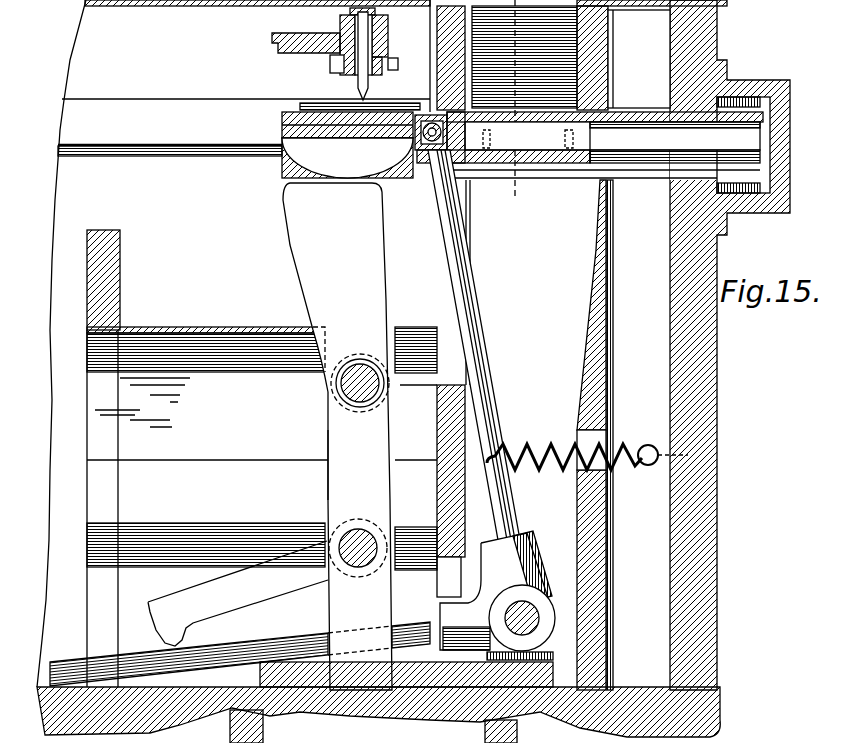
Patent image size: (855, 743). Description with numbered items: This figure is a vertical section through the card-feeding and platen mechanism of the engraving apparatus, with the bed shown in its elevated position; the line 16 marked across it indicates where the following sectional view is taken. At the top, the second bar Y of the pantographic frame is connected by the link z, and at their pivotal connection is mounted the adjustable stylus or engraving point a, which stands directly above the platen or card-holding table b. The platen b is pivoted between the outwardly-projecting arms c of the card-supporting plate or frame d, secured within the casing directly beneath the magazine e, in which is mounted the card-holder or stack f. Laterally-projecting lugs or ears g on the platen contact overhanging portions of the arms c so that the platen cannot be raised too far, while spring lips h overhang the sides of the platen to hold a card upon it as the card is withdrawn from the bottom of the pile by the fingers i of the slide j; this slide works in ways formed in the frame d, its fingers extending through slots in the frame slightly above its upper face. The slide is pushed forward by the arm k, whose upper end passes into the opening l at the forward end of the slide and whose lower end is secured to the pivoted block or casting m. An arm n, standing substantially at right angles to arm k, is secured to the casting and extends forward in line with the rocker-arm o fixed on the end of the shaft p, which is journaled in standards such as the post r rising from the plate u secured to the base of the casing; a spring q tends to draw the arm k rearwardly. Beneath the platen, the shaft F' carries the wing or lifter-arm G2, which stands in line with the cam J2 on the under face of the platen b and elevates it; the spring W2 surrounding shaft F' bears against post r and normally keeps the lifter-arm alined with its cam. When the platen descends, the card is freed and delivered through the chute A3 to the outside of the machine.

The link z is at (304, 26).
The spring lips h is at (311, 103).
The second bar Y is at (328, 58).
The adjustable stylus or engraving point a is at (372, 88).
The platen or card-holding table b is at (282, 115).
The lugs or ears g is at (268, 152).
The arms c is at (282, 176).
The cam J2 is at (363, 153).
The opening l is at (420, 168).
The card-holder or stack f is at (580, 48).
The magazine e is at (586, 68).
The fingers i is at (600, 135).
The section line 16 is at (504, 112).
The slide j is at (543, 160).
The card-supporting plate or frame d is at (636, 170).
The wing or lifter-arm G2 is at (337, 436).
The chute A3 is at (201, 327).
The shaft F' is at (360, 362).
The spring W2 is at (364, 413).
The standard or post r is at (333, 467).
The shaft p is at (356, 520).
The rocker-arm o is at (238, 593).
The arm n is at (272, 636).
The arm k is at (488, 378).
The spring q is at (547, 442).
The pivoted block or casting m is at (526, 542).
The plate u is at (420, 667).